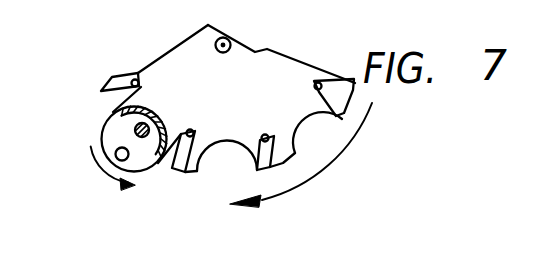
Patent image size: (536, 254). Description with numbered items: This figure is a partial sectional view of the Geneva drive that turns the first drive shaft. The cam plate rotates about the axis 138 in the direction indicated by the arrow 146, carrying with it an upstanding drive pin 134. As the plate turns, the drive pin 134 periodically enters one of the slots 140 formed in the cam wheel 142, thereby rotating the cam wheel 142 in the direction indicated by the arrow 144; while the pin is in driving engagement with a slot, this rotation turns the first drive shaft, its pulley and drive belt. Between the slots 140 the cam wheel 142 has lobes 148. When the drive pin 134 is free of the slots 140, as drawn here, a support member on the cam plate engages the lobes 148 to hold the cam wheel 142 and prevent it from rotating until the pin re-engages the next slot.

The drive pin 134 is at (103, 140).
The axis 138 is at (150, 170).
The slots 140 is at (133, 77).
The cam wheel 142 is at (354, 81).
The arrow 144 is at (344, 148).
The arrow 146 is at (96, 168).
The lobes 148 is at (204, 153).